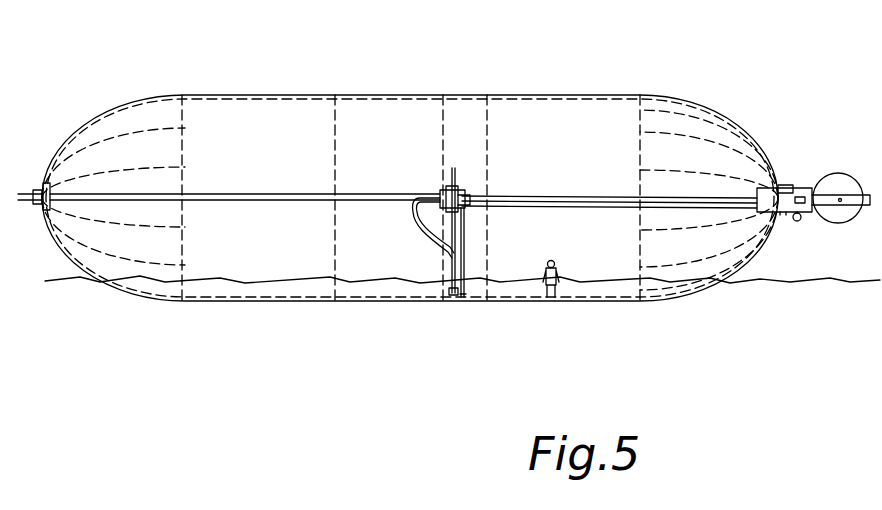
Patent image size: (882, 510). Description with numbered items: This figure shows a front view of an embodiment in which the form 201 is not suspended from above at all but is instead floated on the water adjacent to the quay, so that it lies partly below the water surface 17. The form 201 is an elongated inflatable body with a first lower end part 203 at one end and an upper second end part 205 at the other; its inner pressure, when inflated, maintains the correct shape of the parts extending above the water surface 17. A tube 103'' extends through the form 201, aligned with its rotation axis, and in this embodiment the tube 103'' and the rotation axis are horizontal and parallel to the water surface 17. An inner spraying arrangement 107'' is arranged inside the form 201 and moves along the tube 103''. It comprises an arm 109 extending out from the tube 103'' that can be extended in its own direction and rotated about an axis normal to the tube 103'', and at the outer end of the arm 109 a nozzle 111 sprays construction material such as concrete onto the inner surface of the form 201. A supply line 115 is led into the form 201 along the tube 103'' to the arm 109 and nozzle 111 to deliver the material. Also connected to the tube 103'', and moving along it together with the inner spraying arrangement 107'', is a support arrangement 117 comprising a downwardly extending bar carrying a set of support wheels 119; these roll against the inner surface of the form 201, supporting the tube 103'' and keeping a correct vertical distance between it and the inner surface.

The tube 103'' is at (410, 175).
The first lower end part 203 is at (97, 116).
The form 201 is at (416, 95).
The upper second end part 205 is at (743, 103).
The inner spraying arrangement 107'' is at (501, 115).
The supply line 115 is at (620, 207).
The water surface 17 is at (798, 282).
The arm 109 is at (442, 263).
The nozzle 111 is at (447, 292).
The support wheels 119 is at (463, 268).
The support arrangement 117 is at (465, 270).